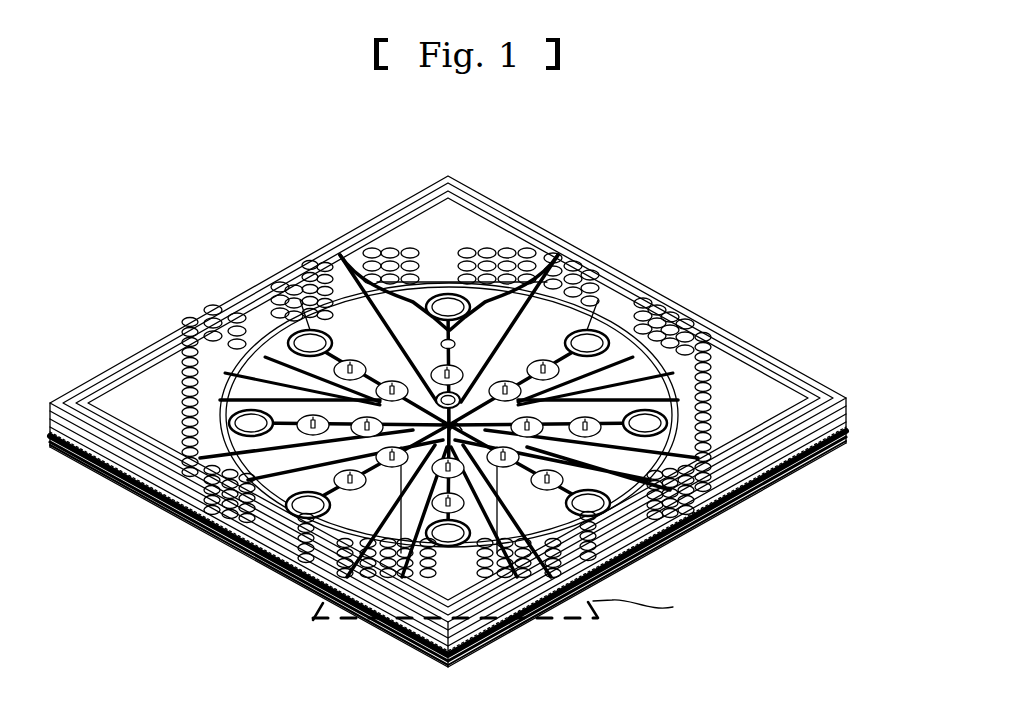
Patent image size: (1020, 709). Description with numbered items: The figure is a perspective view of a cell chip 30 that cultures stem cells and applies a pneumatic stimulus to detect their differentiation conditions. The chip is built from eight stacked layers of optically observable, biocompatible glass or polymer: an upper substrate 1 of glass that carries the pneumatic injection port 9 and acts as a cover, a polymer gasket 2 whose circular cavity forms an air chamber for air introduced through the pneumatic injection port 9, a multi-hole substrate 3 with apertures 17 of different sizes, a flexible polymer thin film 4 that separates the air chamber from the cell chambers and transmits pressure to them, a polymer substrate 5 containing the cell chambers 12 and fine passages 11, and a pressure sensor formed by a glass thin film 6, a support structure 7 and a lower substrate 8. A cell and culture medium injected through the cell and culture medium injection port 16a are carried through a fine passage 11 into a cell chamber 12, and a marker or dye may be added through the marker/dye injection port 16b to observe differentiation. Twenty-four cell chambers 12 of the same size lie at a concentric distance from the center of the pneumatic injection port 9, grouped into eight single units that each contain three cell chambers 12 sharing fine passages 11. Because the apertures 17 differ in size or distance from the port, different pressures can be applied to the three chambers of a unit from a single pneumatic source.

The upper substrate 1 is at (830, 393).
The polymer gasket 2 is at (842, 420).
The multi-hole substrate 3 is at (843, 423).
The polymer thin film 4 is at (841, 430).
The polymer substrate 5 is at (841, 430).
The glass thin film 6 is at (834, 443).
The support structure 7 is at (834, 443).
The lower substrate 8 is at (813, 457).
The pneumatic injection port 9 is at (592, 315).
The fine passage 11 is at (447, 340).
The cell chamber 12 is at (450, 390).
The cell and culture medium injection port 16a is at (213, 303).
The marker/dye injection port 16b is at (290, 280).
The aperture 17 is at (340, 255).
The cell chip 30 is at (757, 264).